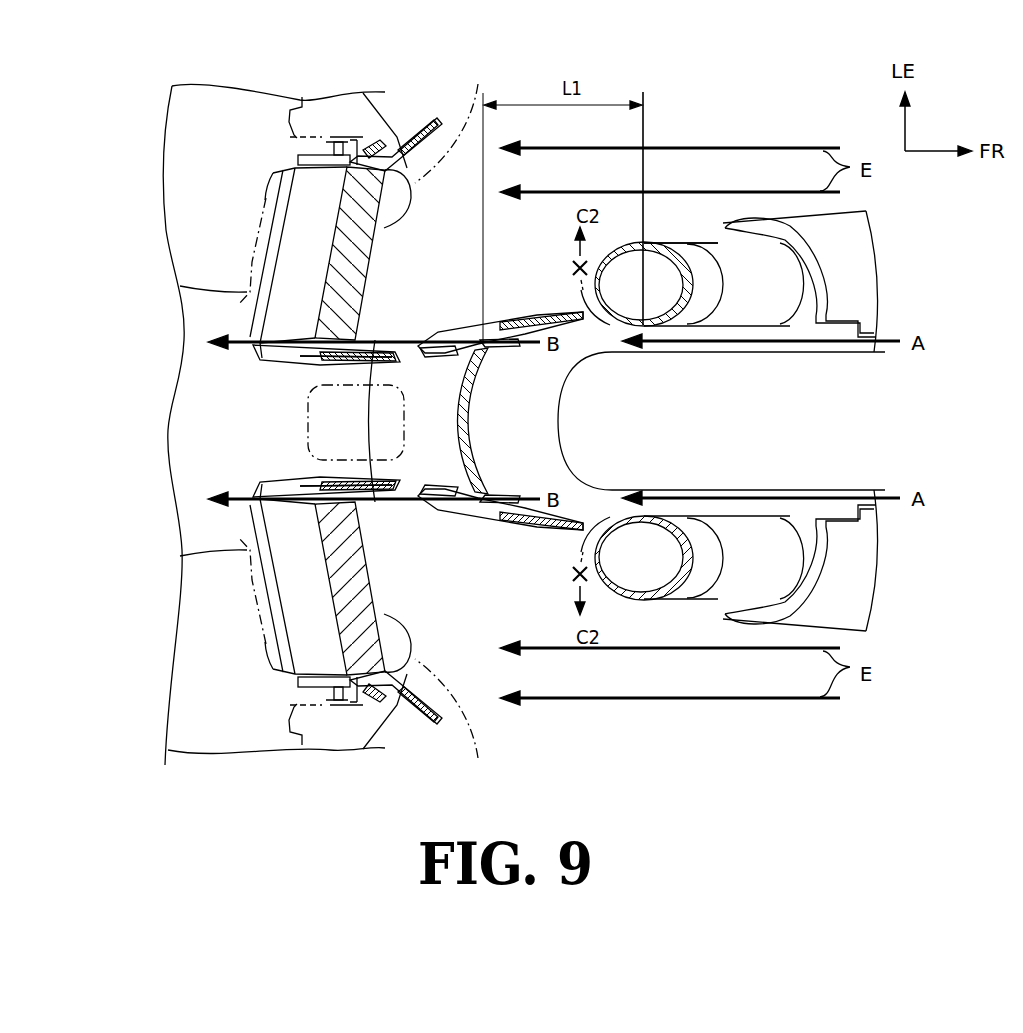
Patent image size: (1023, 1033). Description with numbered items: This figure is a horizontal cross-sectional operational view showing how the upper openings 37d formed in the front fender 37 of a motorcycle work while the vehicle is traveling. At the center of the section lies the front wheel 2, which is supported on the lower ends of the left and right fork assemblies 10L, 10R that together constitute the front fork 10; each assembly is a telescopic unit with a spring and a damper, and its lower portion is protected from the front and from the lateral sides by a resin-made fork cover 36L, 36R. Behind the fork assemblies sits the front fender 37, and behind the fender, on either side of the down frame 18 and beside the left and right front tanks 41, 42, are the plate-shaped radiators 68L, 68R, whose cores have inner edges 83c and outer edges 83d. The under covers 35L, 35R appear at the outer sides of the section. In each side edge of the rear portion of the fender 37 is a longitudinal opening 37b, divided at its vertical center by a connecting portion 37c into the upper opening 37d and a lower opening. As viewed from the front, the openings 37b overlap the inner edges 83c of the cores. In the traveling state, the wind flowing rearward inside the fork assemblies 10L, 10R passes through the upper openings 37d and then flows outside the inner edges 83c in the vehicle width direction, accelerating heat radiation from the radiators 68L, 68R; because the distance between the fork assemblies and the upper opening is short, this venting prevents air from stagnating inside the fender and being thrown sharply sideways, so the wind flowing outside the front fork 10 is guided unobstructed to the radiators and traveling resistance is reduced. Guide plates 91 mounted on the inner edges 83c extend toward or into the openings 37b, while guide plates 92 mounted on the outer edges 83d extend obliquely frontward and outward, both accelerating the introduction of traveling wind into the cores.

The front wheel 2 is at (852, 421).
The front fork 10 is at (716, 236).
The left fork assembly 10L is at (690, 244).
The right fork assembly 10R is at (688, 598).
The down frame 18 is at (308, 421).
The left under cover 35L is at (433, 121).
The right under cover 35R is at (455, 692).
The left fork cover 36L is at (866, 256).
The right fork cover 36R is at (868, 560).
The front fender 37 is at (530, 540).
The opening 37b is at (466, 338).
The connecting portion 37c is at (473, 421).
The upper opening 37d is at (500, 337).
The left front tank 41 is at (303, 108).
The right front tank 42 is at (300, 734).
The left radiator 68L is at (298, 250).
The right radiator 68R is at (298, 598).
The inner edge of core 83c is at (318, 363).
The outer edge of core 83d is at (356, 150).
The guide plate 91 is at (388, 346).
The guide plate 92 is at (415, 128).